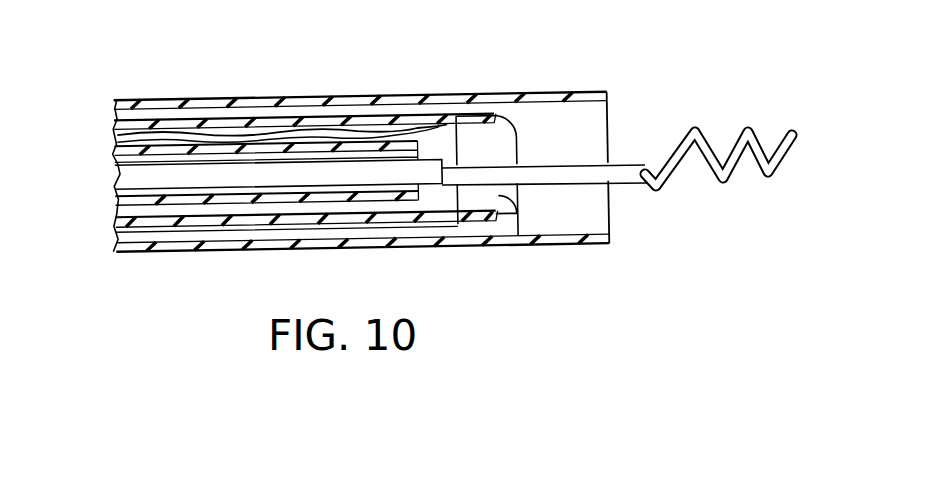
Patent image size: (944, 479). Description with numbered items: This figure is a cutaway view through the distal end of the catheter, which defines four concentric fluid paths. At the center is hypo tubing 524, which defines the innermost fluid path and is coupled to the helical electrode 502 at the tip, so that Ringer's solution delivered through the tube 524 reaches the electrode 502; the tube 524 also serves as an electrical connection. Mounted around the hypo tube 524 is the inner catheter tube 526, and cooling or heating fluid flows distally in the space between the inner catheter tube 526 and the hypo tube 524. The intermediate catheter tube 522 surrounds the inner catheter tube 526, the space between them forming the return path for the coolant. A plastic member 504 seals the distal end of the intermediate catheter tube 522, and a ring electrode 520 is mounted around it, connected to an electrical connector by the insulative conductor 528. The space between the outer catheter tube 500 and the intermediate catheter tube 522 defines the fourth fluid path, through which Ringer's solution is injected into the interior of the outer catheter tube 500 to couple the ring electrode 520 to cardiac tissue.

The outer catheter tube 500 is at (363, 97).
The helical electrode 502 is at (700, 132).
The plastic member 504 is at (521, 240).
The ring electrode 520 is at (463, 213).
The intermediate catheter tube 522 is at (355, 213).
The hypo tubing 524 is at (267, 180).
The inner catheter tube 526 is at (143, 200).
The insulative conductor 528 is at (200, 143).